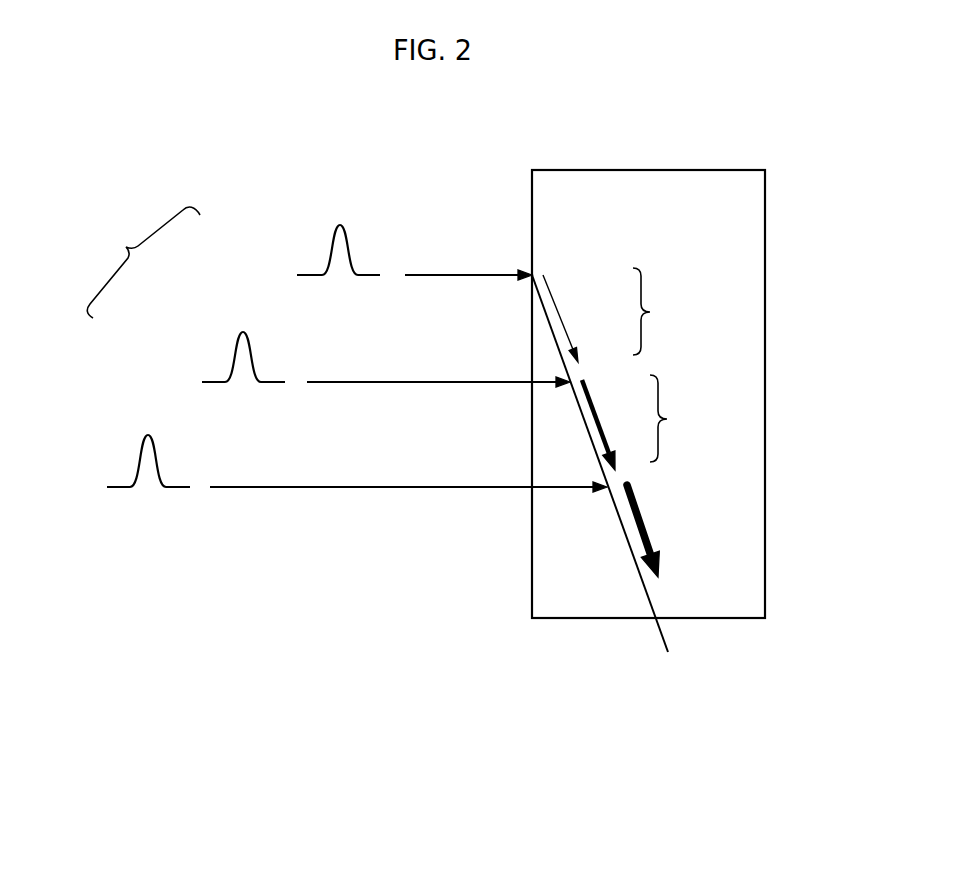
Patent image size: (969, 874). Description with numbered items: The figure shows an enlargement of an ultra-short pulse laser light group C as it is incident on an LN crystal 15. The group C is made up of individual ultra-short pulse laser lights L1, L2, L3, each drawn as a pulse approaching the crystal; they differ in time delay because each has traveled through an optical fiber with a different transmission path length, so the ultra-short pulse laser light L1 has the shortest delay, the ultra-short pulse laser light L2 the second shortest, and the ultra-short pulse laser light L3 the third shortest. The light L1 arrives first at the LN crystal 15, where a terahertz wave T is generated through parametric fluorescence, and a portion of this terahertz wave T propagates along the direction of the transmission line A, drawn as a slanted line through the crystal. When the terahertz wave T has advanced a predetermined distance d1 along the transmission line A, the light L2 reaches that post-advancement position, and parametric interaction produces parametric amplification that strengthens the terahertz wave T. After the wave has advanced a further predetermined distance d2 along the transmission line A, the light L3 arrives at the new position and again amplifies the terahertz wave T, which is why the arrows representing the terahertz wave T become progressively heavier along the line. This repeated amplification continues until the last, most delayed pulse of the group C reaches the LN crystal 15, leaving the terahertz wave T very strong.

The LN crystal 15 is at (545, 168).
The ultra-short pulse laser light L1 is at (327, 253).
The ultra-short pulse laser light L2 is at (228, 361).
The ultra-short pulse laser light L3 is at (142, 462).
The pulse laser light group C is at (143, 262).
The transmission line A is at (605, 479).
The terahertz wave T is at (560, 310).
The predetermined distance d1 is at (660, 311).
The predetermined distance d2 is at (685, 418).